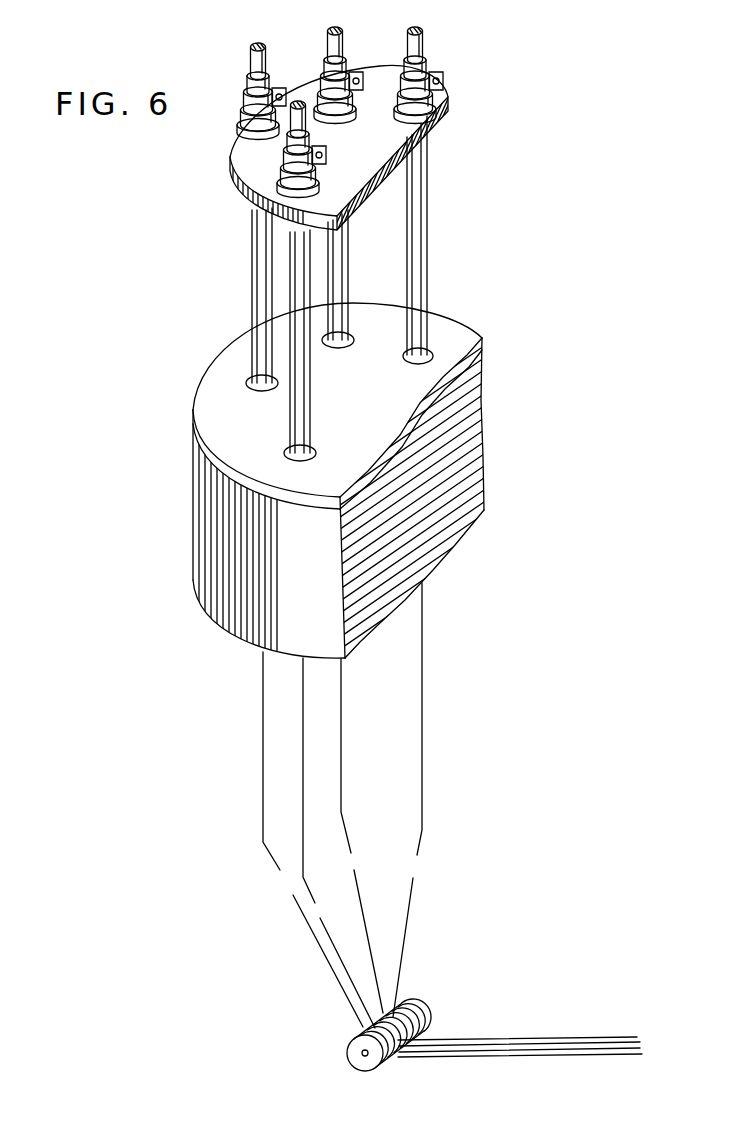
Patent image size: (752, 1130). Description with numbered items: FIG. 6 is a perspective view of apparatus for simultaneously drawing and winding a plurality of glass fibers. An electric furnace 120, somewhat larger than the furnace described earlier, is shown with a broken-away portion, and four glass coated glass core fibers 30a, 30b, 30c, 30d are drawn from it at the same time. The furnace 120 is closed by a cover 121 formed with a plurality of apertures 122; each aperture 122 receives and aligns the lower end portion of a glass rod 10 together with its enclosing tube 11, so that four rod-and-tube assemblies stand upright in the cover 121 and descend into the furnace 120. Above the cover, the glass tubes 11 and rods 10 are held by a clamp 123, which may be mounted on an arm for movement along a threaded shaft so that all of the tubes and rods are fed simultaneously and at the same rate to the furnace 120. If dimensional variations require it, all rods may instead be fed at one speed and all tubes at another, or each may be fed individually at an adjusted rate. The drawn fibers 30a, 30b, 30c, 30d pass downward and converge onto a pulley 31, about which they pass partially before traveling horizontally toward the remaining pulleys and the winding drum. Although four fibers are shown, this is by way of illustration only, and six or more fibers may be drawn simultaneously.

The glass rod 10 is at (261, 44).
The enclosing tube 11 is at (344, 69).
The clamp 123 is at (410, 128).
The cover 121 is at (450, 336).
The aperture 122 is at (348, 338).
The electric furnace 120 is at (466, 477).
The glass coated glass core fiber 30a is at (262, 744).
The glass coated glass core fiber 30b is at (302, 776).
The glass coated glass core fiber 30c is at (343, 781).
The glass coated glass core fiber 30d is at (423, 779).
The pulley 31 is at (353, 1051).